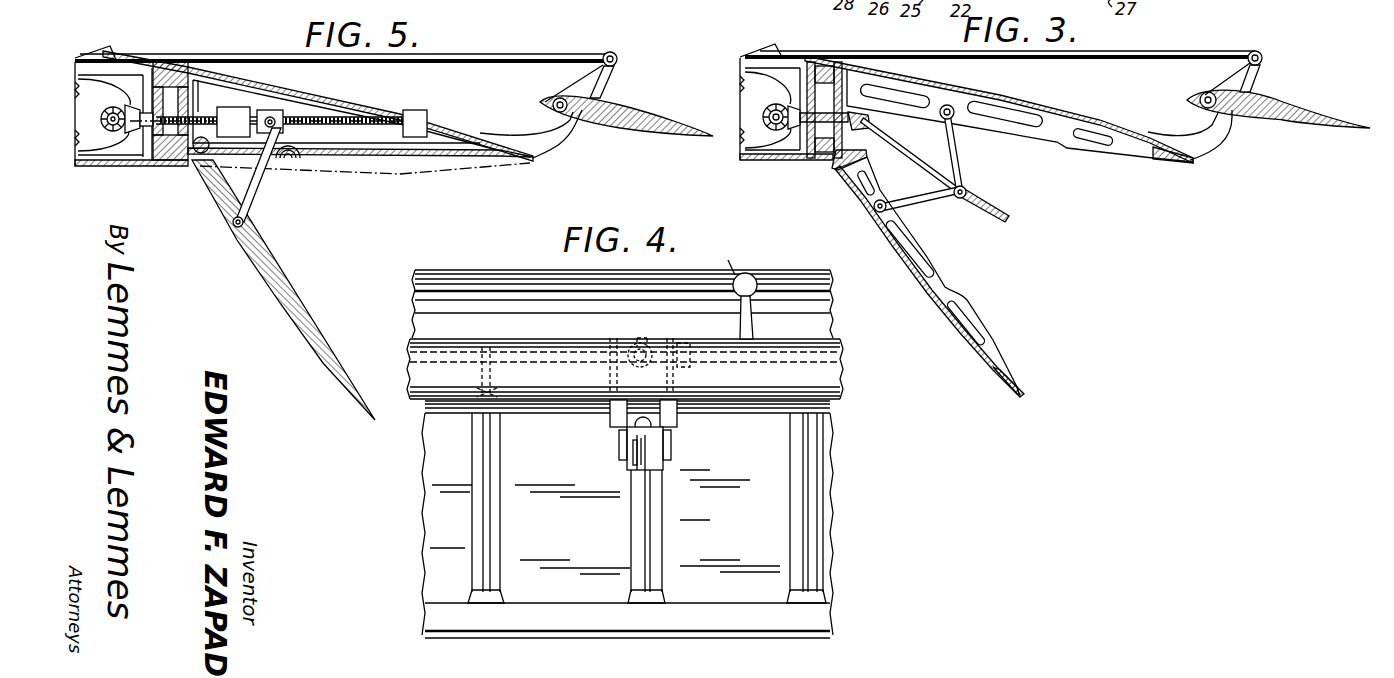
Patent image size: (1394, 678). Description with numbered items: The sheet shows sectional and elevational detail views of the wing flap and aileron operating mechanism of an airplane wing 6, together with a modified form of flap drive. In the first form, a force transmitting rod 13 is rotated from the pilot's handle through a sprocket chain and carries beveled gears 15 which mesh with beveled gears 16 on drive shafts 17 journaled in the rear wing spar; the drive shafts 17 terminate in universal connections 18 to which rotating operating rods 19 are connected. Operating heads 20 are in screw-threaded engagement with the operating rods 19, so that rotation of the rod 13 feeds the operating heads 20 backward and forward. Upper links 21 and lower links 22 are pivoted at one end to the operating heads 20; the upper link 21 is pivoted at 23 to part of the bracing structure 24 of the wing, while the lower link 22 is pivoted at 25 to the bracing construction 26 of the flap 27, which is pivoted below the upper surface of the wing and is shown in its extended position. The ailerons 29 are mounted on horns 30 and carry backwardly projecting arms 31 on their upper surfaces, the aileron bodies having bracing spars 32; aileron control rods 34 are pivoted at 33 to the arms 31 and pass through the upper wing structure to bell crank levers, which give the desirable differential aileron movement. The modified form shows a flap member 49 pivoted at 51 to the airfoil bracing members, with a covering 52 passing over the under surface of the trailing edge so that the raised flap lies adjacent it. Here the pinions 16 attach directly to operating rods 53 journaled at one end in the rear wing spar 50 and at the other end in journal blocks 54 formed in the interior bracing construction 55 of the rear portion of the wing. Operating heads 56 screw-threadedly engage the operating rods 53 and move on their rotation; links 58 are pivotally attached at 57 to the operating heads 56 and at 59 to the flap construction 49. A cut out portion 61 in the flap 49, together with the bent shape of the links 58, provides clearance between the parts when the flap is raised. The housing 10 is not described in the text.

In FIG. 5, the wing 6 is at (136, 60).
In FIG. 3, the wing 6 is at (742, 60).
In FIG. 4, the wing 6 is at (497, 272).
In FIG. 3, the housing 10 is at (782, 98).
In FIG. 3, the force transmitting rod 13 is at (763, 123).
In FIG. 4, the force transmitting rod 13 is at (548, 348).
In FIG. 3, the beveled gears 15 is at (763, 111).
In FIG. 4, the beveled gears 15 is at (662, 343).
In FIG. 5, the beveled gears 16 is at (133, 134).
In FIG. 4, the beveled gears 16 is at (647, 342).
In FIG. 3, the drive shafts 17 is at (826, 112).
In FIG. 3, the universal connections 18 is at (871, 120).
In FIG. 3, the operating rods 19 is at (910, 152).
In FIG. 4, the operating rods 19 is at (630, 444).
In FIG. 3, the operating heads 20 is at (968, 190).
In FIG. 4, the operating heads 20 is at (652, 428).
In FIG. 3, the upper links 21 is at (956, 149).
In FIG. 4, the upper links 21 is at (609, 414).
In FIG. 3, the lower links 22 is at (937, 194).
In FIG. 4, the lower links 22 is at (613, 452).
In FIG. 3, the pivot 23 is at (950, 104).
In FIG. 3, the bracing structure 24 is at (985, 104).
In FIG. 3, the pivot 25 is at (873, 210).
In FIG. 4, the pivot 25 is at (619, 470).
In FIG. 3, the bracing construction 26 is at (917, 247).
In FIG. 4, the bracing construction 26 is at (500, 533).
In FIG. 3, the flap 27 is at (936, 310).
In FIG. 4, the flap 27 is at (432, 516).
In FIG. 5, the ailerons 29 is at (686, 122).
In FIG. 3, the ailerons 29 is at (1315, 117).
In FIG. 4, the ailerons 29 is at (830, 368).
In FIG. 5, the horns 30 is at (572, 146).
In FIG. 3, the horns 30 is at (1226, 143).
In FIG. 4, the horns 30 is at (477, 373).
In FIG. 5, the arms 31 is at (602, 86).
In FIG. 3, the arms 31 is at (1255, 81).
In FIG. 4, the arms 31 is at (754, 322).
In FIG. 5, the bracing spars 32 is at (550, 109).
In FIG. 3, the bracing spars 32 is at (1205, 96).
In FIG. 5, the pivot 33 is at (617, 58).
In FIG. 3, the pivot 33 is at (1263, 58).
In FIG. 4, the pivot 33 is at (756, 278).
In FIG. 5, the aileron control rods 34 is at (530, 58).
In FIG. 3, the aileron control rods 34 is at (1092, 58).
In FIG. 4, the aileron control rods 34 is at (730, 258).
In FIG. 5, the flap member 49 is at (258, 281).
In FIG. 5, the rear wing spar 50 is at (170, 78).
In FIG. 5, the pivot 51 is at (197, 154).
In FIG. 5, the covering 52 is at (407, 156).
In FIG. 5, the operating rods 53 is at (325, 117).
In FIG. 5, the journal blocks 54 is at (428, 122).
In FIG. 5, the interior bracing construction 55 is at (238, 92).
In FIG. 5, the operating heads 56 is at (312, 112).
In FIG. 5, the pivot 57 is at (270, 117).
In FIG. 5, the links 58 is at (253, 186).
In FIG. 5, the pivot 59 is at (246, 222).
In FIG. 5, the cut out portion 61 is at (302, 153).